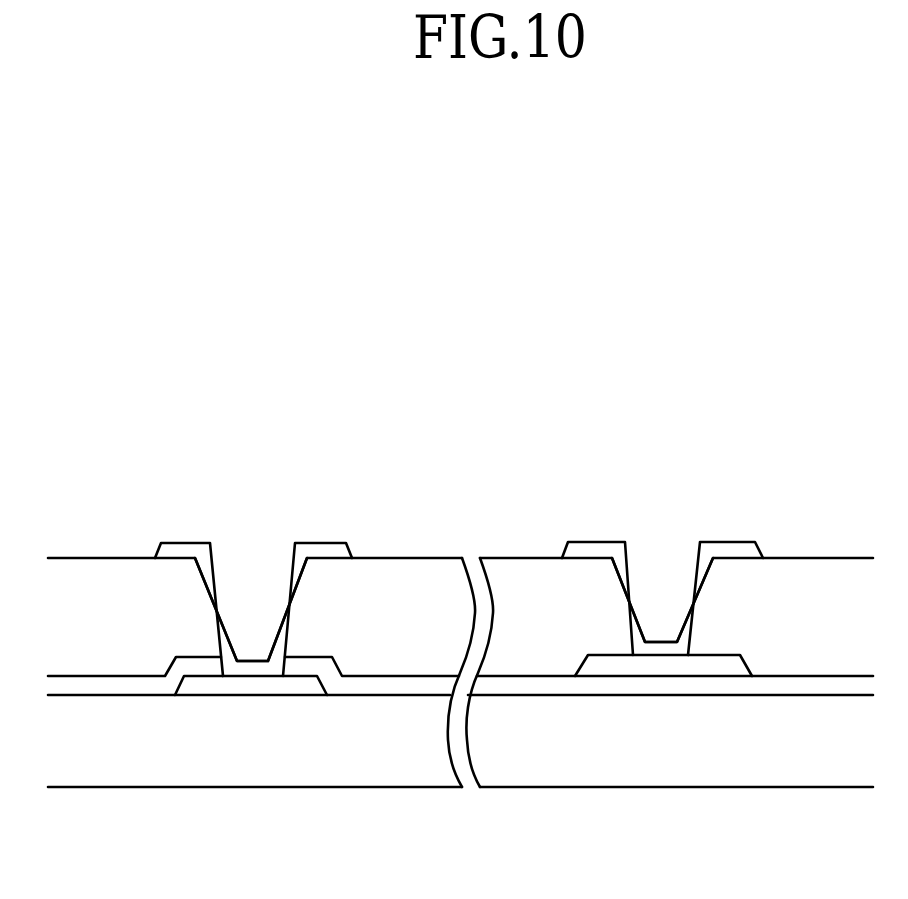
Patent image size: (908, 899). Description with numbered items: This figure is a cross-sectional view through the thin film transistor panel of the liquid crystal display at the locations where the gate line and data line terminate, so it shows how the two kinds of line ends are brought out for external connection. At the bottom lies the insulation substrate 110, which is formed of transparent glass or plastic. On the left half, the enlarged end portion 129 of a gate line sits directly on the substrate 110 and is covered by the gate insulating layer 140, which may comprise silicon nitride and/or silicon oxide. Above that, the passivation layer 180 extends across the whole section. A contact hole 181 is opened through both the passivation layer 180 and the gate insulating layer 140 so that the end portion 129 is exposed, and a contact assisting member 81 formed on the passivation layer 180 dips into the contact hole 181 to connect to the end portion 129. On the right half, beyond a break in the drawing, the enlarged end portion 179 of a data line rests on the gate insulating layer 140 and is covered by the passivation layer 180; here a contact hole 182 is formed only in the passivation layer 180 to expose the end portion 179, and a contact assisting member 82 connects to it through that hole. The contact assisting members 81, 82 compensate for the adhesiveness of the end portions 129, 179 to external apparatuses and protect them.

The insulation substrate 110 is at (312, 763).
The gate insulating layer 140 is at (110, 687).
The end portion 129 is at (225, 692).
The end portion 179 is at (675, 668).
The passivation layer 180 is at (102, 585).
The contact hole 181 is at (207, 591).
The contact hole 182 is at (622, 590).
The contact assisting member 81 is at (172, 548).
The contact assisting member 82 is at (585, 550).